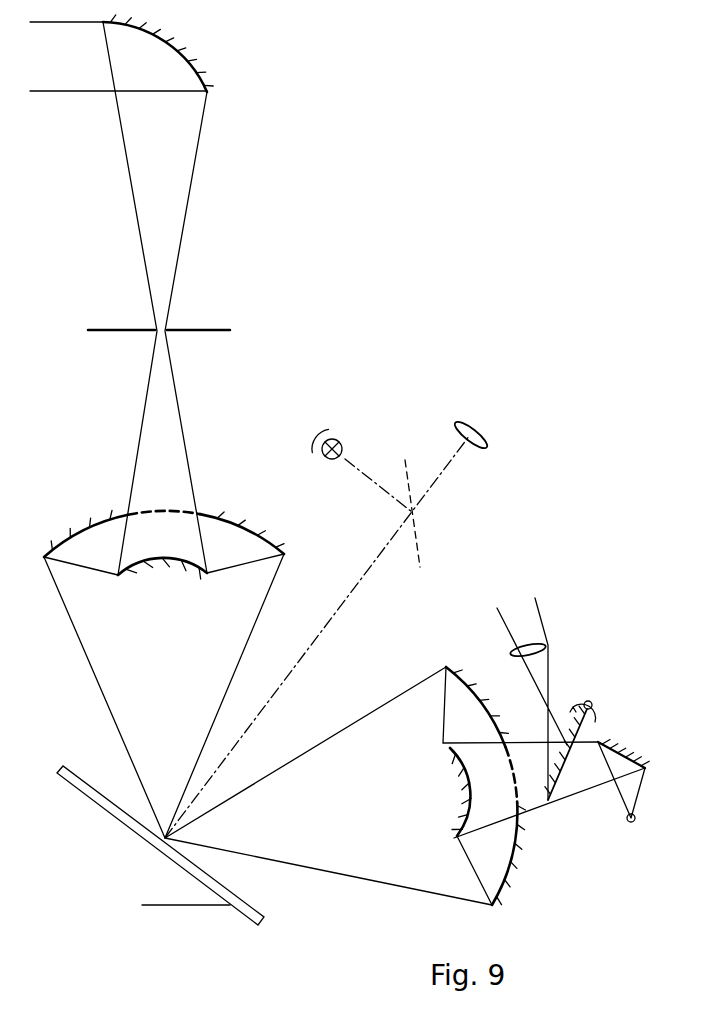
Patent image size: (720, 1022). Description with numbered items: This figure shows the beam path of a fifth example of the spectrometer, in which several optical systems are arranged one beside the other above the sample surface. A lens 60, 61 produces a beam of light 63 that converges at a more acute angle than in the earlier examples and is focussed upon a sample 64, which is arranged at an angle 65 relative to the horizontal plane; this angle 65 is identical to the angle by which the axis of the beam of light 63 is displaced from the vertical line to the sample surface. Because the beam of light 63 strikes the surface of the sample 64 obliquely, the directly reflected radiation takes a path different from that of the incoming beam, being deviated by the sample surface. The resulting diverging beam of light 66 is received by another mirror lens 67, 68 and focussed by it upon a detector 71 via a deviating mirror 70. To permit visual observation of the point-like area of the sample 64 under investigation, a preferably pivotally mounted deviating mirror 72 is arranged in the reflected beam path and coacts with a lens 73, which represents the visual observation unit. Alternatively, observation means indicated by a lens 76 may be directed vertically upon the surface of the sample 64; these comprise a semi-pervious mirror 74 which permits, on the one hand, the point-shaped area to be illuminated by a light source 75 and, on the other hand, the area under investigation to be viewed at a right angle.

The lens 60 is at (97, 522).
The lens 61 is at (163, 575).
The beam of light 63 is at (212, 693).
The sample 64 is at (95, 798).
The angle 65 is at (198, 896).
The diverging beam of light 66 is at (340, 735).
The mirror lens 67 is at (449, 761).
The mirror lens 68 is at (466, 669).
The deviating mirror 70 is at (620, 752).
The detector 71 is at (634, 822).
The deviating mirror 72 is at (542, 817).
The lens 73 is at (530, 642).
The semi-pervious mirror 74 is at (416, 527).
The light source 75 is at (342, 448).
The lens 76 is at (485, 441).